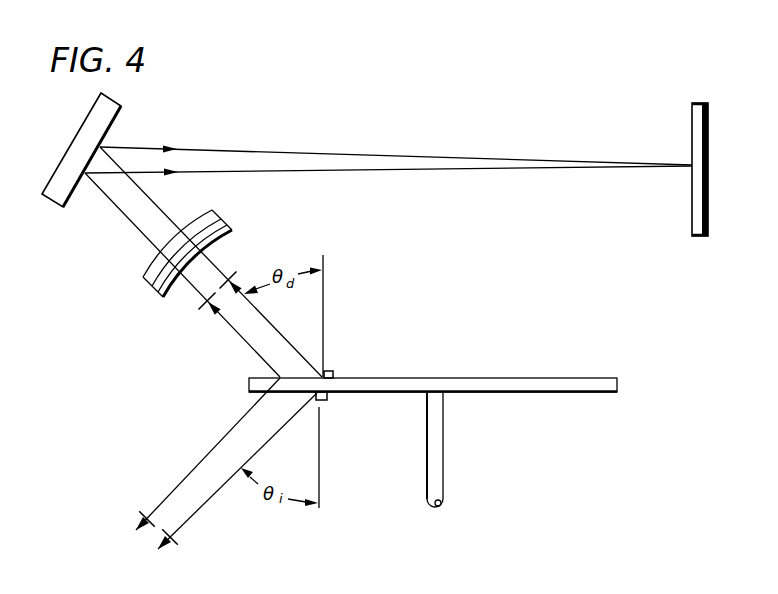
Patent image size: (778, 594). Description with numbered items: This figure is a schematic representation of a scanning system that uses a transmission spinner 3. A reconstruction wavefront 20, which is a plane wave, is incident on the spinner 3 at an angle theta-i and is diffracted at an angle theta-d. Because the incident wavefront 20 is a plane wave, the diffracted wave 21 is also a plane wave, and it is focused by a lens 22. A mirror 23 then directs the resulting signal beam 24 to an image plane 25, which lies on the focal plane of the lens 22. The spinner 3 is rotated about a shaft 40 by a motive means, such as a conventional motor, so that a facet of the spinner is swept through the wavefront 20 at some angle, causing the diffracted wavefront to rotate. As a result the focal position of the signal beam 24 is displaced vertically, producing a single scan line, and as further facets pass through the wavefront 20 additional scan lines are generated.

The spinner 3 is at (562, 378).
The reconstruction wavefront 20 is at (203, 503).
The diffracted wave 21 is at (230, 327).
The lens 22 is at (234, 232).
The mirror 23 is at (108, 110).
The signal beam 24 is at (640, 165).
The image plane 25 is at (692, 114).
The shaft 40 is at (431, 463).